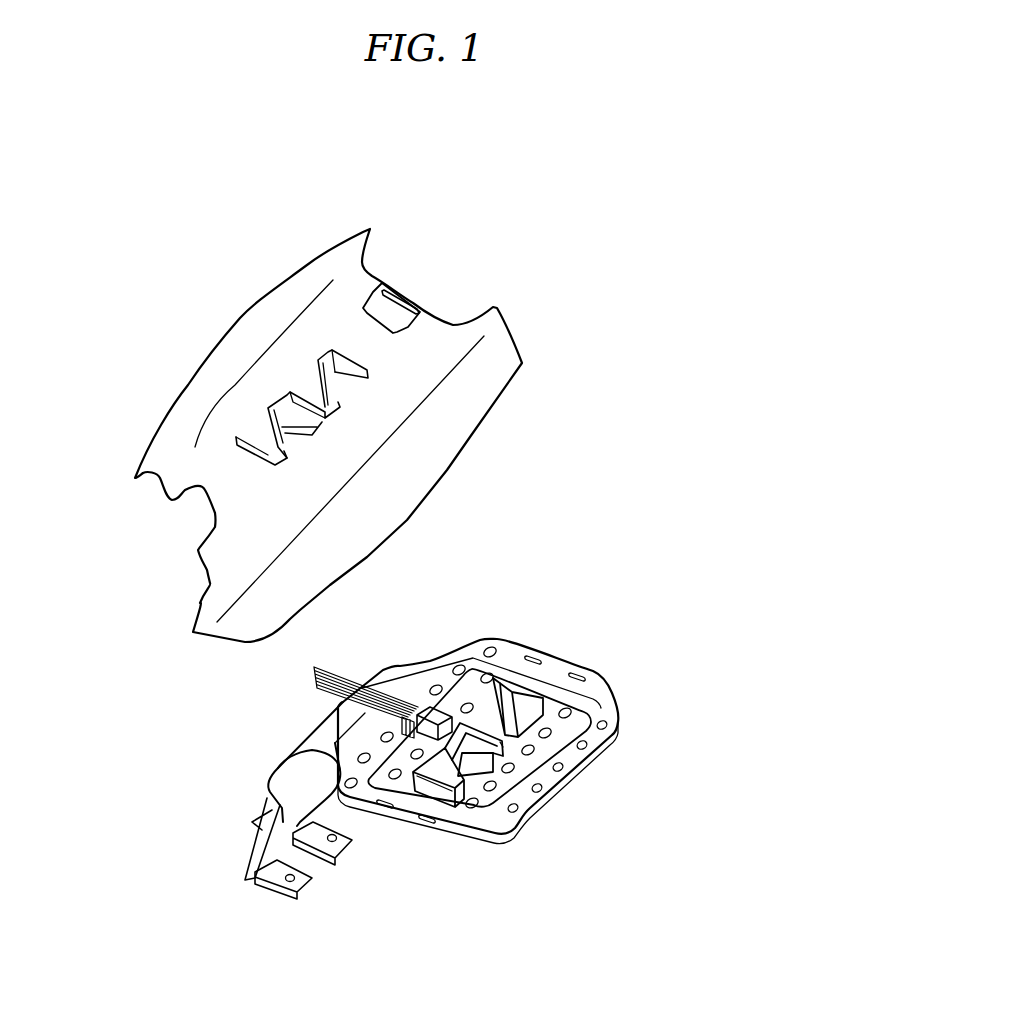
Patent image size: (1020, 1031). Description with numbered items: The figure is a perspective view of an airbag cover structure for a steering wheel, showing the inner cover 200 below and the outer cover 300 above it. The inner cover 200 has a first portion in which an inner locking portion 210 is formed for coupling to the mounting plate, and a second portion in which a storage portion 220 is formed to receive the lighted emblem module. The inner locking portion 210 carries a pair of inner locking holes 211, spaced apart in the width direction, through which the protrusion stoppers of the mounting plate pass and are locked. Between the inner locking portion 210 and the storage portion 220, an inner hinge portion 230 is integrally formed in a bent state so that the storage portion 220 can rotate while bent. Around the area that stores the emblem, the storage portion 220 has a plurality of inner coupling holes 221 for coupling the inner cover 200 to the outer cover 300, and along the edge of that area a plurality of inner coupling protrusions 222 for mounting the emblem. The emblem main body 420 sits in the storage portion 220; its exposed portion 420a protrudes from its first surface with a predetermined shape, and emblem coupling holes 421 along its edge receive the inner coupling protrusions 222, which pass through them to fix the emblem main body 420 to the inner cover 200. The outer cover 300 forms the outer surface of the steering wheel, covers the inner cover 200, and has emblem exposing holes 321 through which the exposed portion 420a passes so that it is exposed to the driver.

The inner cover 200 is at (513, 609).
The inner locking portion 210 is at (265, 805).
The inner locking holes 211 is at (273, 842).
The storage portion 220 is at (606, 703).
The inner coupling holes 221 is at (577, 671).
The inner coupling protrusions 222 is at (604, 749).
The inner hinge portion 230 is at (335, 725).
The outer cover 300 is at (420, 279).
The emblem exposing holes 321 is at (293, 400).
The emblem main body 420 is at (463, 810).
The exposed portion 420a is at (577, 722).
The emblem coupling holes 421 is at (474, 805).